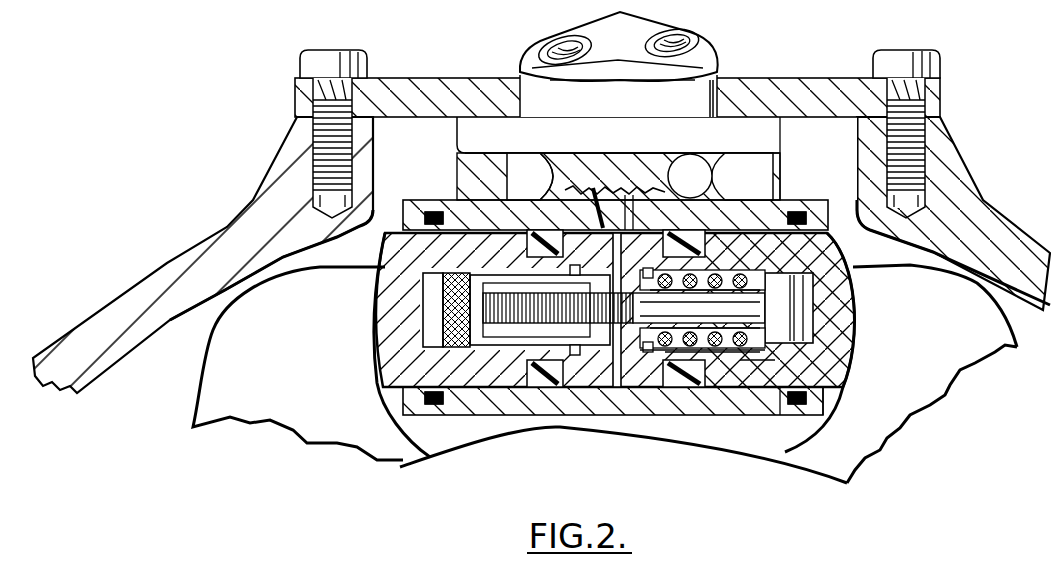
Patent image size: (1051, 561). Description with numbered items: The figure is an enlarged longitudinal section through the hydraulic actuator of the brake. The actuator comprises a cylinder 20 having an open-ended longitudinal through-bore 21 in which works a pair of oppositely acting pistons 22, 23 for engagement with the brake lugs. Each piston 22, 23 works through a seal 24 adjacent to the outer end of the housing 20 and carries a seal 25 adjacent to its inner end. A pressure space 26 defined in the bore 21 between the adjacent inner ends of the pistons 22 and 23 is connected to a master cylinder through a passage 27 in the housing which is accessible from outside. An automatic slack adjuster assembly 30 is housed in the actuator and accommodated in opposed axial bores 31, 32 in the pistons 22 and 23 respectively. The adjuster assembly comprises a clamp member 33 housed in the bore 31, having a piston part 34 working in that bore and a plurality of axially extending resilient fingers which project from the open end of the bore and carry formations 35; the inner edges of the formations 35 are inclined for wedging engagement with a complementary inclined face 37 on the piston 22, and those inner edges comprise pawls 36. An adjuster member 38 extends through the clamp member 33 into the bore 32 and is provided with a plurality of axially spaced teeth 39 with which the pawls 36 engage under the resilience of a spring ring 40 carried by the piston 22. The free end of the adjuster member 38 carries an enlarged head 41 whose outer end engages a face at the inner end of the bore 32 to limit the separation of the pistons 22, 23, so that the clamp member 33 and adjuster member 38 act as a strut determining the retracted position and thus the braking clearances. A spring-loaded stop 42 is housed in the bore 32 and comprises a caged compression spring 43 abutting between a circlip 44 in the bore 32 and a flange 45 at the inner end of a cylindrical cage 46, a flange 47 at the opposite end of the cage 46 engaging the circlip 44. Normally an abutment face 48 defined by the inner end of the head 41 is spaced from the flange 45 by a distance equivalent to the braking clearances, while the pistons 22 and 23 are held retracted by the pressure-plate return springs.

The cylinder 20 is at (648, 415).
The through-bore 21 is at (505, 415).
The piston 22 is at (430, 449).
The piston 23 is at (768, 408).
The seal 24 is at (433, 212).
The seal 25 is at (545, 262).
The pressure space 26 is at (620, 395).
The passage 27 is at (622, 230).
The automatic slack adjuster assembly 30 is at (727, 400).
The axial bore 31 is at (467, 415).
The axial bore 32 is at (767, 378).
The clamp member 33 is at (526, 362).
The piston part 34 is at (400, 372).
The formations 35 is at (584, 235).
The pawls 36 is at (636, 265).
The inclined face 37 is at (575, 355).
The adjuster member 38 is at (787, 212).
The teeth 39 is at (497, 300).
The spring ring 40 is at (568, 270).
The enlarged head 41 is at (797, 298).
The spring-loaded stop 42 is at (762, 265).
The caged compression spring 43 is at (808, 392).
The circlip 44 is at (672, 422).
The flange 45 is at (792, 274).
The cylindrical cage 46 is at (702, 258).
The flange 47 is at (662, 216).
The abutment face 48 is at (760, 350).